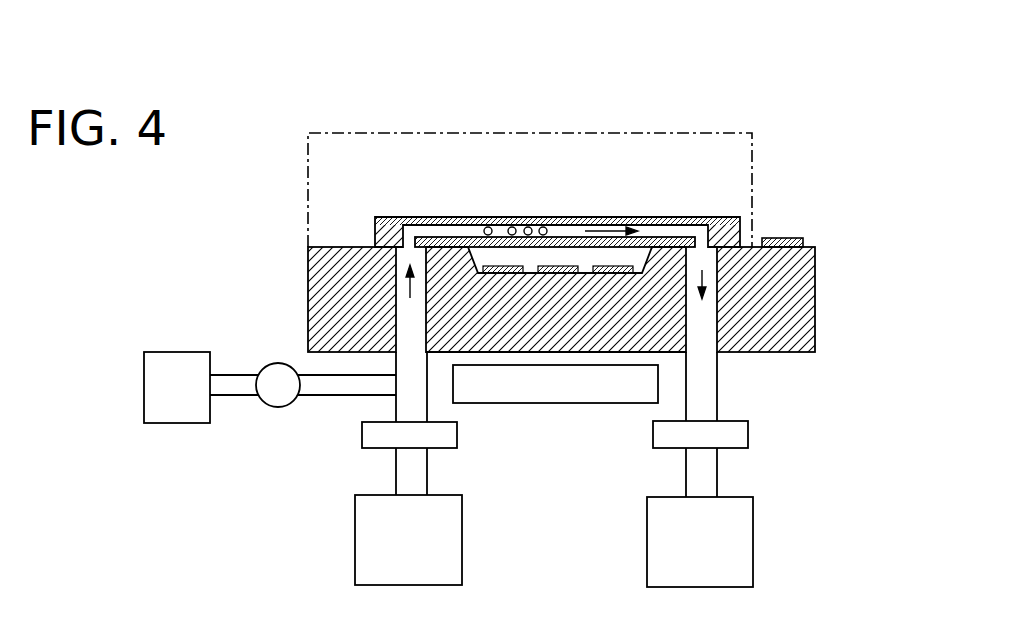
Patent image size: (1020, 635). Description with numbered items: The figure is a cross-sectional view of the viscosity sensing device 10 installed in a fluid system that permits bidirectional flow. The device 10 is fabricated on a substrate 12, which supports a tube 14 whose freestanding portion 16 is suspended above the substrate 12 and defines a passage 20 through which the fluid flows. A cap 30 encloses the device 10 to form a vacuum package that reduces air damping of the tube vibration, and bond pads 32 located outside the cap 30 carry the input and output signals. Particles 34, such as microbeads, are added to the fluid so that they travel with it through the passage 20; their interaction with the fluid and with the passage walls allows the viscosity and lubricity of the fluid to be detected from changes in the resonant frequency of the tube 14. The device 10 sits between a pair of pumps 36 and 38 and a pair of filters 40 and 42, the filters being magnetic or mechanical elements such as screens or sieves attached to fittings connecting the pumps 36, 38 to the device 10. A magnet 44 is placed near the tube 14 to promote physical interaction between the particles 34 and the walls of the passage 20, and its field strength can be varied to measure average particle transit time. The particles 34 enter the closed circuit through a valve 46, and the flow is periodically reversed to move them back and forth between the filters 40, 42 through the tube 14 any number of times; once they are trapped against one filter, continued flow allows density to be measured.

The viscosity sensing device 10 is at (560, 97).
The substrate 12 is at (803, 300).
The tube 14 is at (381, 203).
The freestanding portion 16 is at (628, 217).
The passage 20 is at (478, 228).
The cap 30 is at (737, 133).
The bond pads 32 is at (793, 239).
The particles 34 is at (540, 226).
The pump 36 is at (442, 560).
The pump 38 is at (733, 562).
The filter 40 is at (438, 437).
The filter 42 is at (730, 437).
The magnet 44 is at (580, 387).
The valve 46 is at (278, 390).